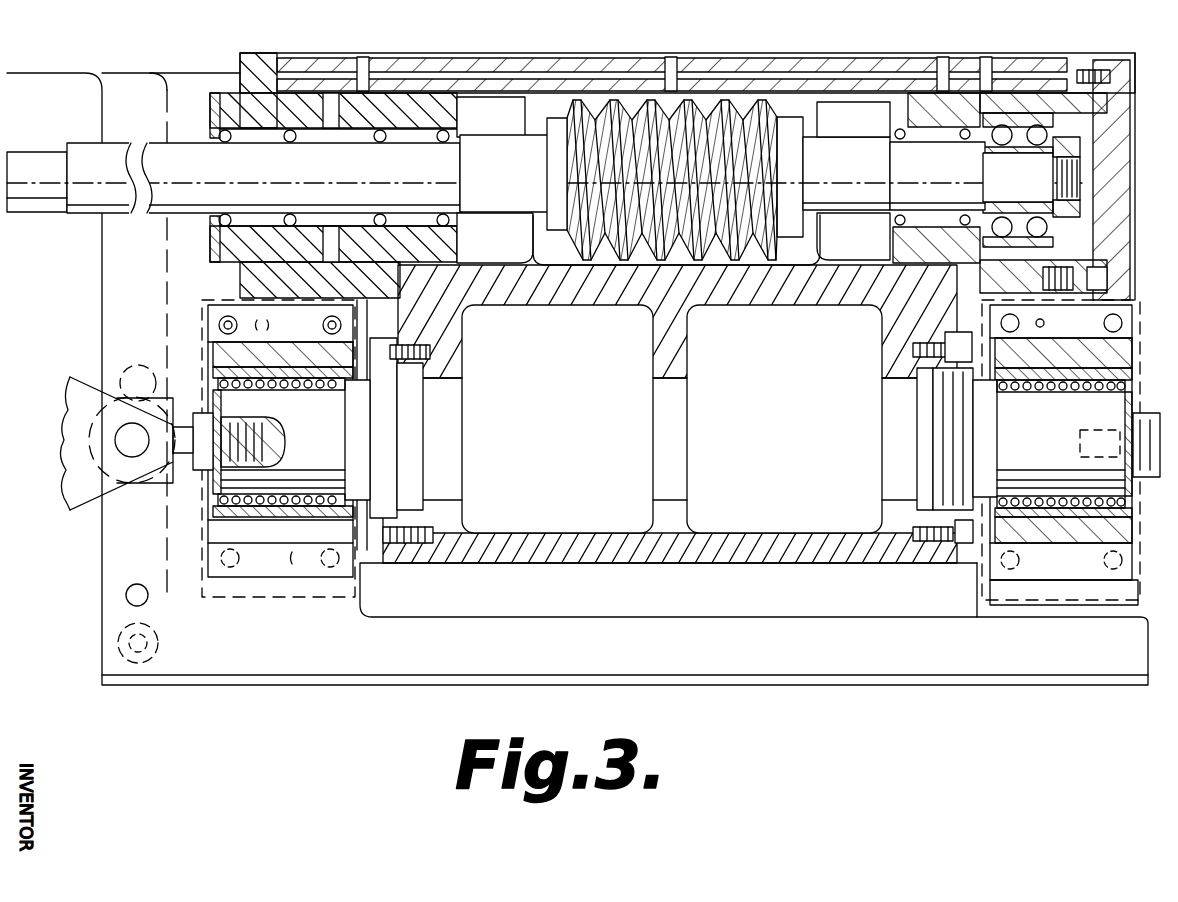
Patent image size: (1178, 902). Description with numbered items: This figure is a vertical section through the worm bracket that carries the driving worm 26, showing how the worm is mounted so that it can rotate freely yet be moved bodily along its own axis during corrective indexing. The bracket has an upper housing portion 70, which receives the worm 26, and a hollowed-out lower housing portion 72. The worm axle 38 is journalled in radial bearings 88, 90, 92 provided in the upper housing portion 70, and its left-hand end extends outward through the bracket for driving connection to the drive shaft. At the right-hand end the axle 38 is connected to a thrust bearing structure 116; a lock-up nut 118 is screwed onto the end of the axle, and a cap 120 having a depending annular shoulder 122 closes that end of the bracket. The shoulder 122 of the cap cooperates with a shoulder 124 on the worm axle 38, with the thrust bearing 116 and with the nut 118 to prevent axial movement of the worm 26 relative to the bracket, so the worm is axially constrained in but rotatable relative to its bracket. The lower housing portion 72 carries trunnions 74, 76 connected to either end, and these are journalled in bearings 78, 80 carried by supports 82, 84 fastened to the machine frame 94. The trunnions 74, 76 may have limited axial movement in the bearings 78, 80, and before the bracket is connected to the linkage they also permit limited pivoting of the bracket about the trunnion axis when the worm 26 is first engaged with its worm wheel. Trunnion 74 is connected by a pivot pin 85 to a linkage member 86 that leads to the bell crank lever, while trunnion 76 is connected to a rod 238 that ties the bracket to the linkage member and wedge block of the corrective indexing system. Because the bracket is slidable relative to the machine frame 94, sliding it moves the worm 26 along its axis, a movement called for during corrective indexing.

The worm 26 is at (607, 296).
The worm axle 38 is at (673, 180).
The upper housing portion 70 is at (692, 70).
The lower housing portion 72 is at (826, 530).
The trunnion 74 is at (323, 434).
The trunnion 76 is at (1057, 434).
The bearing 78 is at (295, 505).
The bearing 80 is at (1057, 514).
The support 82 is at (222, 346).
The support 84 is at (1028, 580).
The pivot pin 85 is at (133, 458).
The linkage member 86 is at (67, 383).
The radial bearing 88 is at (240, 82).
The radial bearing 90 is at (390, 128).
The radial bearing 92 is at (893, 142).
The machine frame 94 is at (852, 688).
The thrust bearing structure 116 is at (1017, 92).
The lock-up nut 118 is at (1095, 140).
The cap 120 is at (1138, 92).
The annular shoulder 122 is at (1083, 230).
The shoulder 124 is at (1037, 184).
The rod 238 is at (1135, 427).